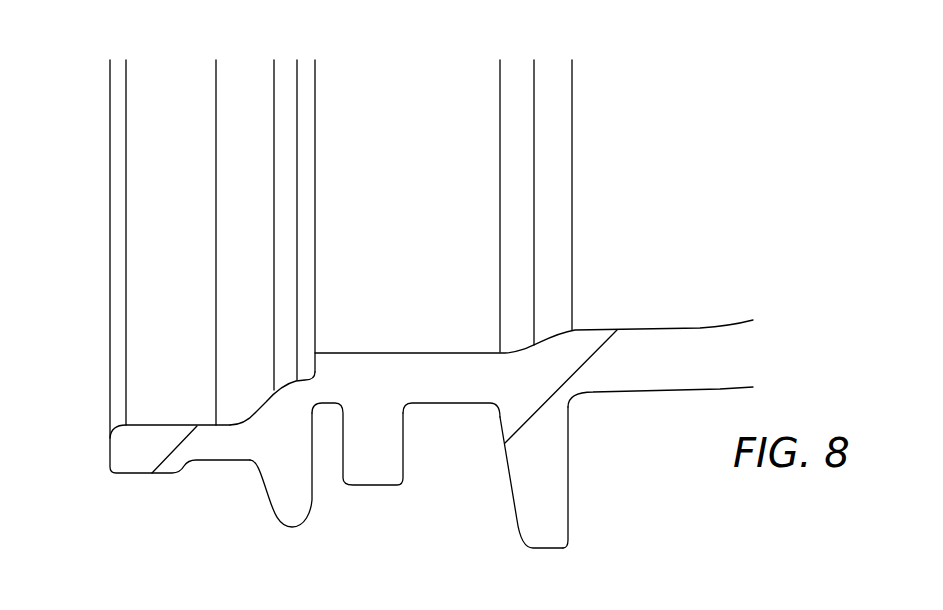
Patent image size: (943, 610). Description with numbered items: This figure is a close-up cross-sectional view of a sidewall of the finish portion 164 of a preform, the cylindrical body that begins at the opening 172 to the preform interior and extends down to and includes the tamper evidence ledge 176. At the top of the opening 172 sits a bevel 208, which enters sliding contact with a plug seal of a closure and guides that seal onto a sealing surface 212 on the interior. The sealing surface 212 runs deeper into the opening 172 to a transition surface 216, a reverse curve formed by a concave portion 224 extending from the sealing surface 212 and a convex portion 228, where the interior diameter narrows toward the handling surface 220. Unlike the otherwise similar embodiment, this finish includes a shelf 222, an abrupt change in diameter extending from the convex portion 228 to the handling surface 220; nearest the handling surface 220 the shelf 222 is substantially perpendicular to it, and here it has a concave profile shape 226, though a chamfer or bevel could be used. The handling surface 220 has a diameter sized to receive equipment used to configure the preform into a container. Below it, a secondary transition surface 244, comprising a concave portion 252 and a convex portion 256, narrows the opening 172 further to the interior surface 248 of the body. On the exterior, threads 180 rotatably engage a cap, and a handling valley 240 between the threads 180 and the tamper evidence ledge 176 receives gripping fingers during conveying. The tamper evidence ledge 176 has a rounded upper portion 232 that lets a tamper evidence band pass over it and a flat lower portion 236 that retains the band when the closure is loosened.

The finish portion 164 is at (140, 522).
The opening 172 is at (171, 262).
The tamper evidence ledge 176 is at (563, 548).
The threads 180 is at (283, 525).
The bevel 208 is at (118, 105).
The sealing surface 212 is at (192, 327).
The transition surface 216 is at (211, 212).
The handling surface 220 is at (419, 262).
The shelf 222 is at (310, 152).
The concave portion 224 is at (235, 75).
The concave profile shape 226 is at (310, 377).
The convex portion 228 is at (282, 72).
The rounded upper portion 232 is at (513, 520).
The flat lower portion 236 is at (568, 460).
The handling valley 240 is at (448, 405).
The secondary transition surface 244 is at (590, 116).
The interior surface 248 is at (655, 219).
The concave portion 252 is at (515, 68).
The convex portion 256 is at (553, 68).